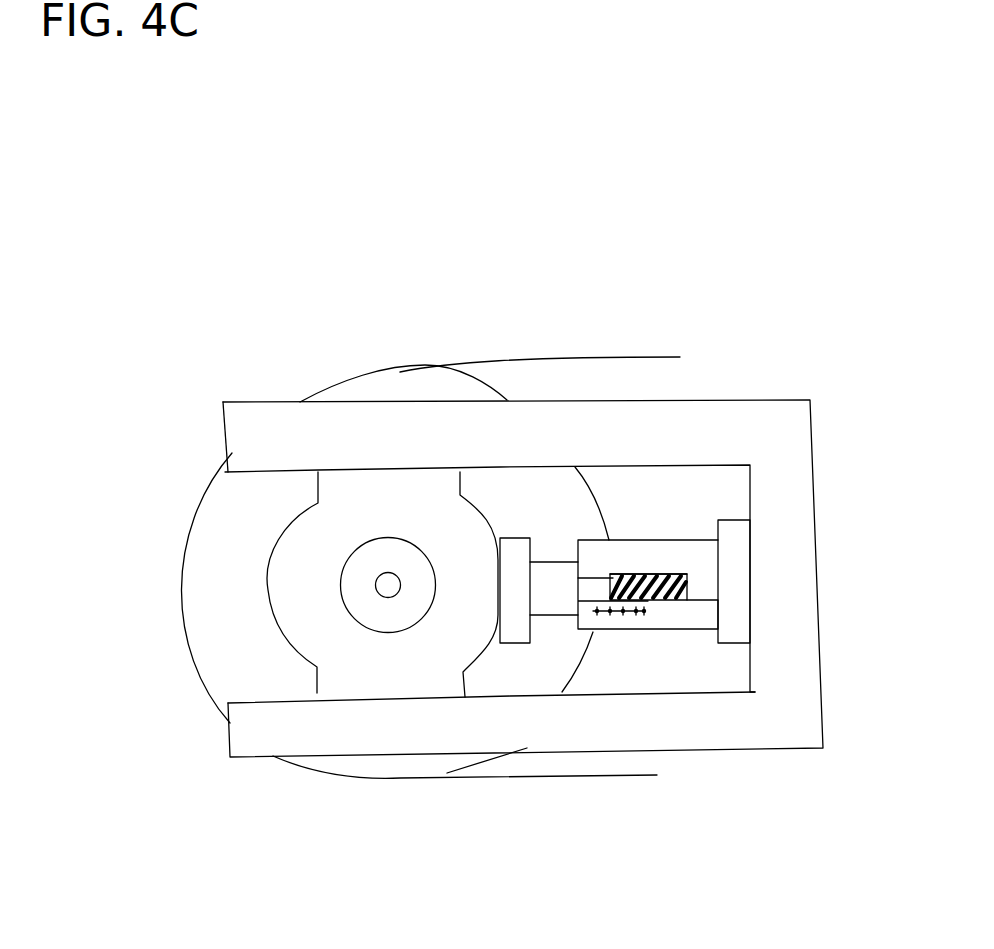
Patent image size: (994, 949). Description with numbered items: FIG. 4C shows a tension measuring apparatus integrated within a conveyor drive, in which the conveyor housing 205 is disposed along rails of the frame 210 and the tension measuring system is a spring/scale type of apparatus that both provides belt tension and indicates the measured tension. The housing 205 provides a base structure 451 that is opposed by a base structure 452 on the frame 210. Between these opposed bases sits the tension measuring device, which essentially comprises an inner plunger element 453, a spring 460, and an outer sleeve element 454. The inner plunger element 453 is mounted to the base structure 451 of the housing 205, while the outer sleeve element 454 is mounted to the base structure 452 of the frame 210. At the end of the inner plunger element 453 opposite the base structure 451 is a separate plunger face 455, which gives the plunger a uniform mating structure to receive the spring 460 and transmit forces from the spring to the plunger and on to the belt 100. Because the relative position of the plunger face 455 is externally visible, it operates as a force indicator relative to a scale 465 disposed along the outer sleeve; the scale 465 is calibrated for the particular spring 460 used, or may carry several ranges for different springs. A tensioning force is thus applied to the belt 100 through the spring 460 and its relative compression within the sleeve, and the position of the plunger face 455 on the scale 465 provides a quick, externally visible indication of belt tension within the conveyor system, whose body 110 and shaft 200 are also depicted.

The belt 100 is at (552, 352).
The housing body 110 is at (228, 647).
The shaft 200 is at (357, 575).
The conveyor housing 205 is at (333, 530).
The frame 210 is at (763, 427).
The base structure 451 is at (497, 645).
The base structure 452 is at (732, 553).
The inner plunger element 453 is at (545, 582).
The outer sleeve element 454 is at (707, 605).
The plunger face 455 is at (618, 577).
The spring 460 is at (646, 603).
The scale 465 is at (604, 624).